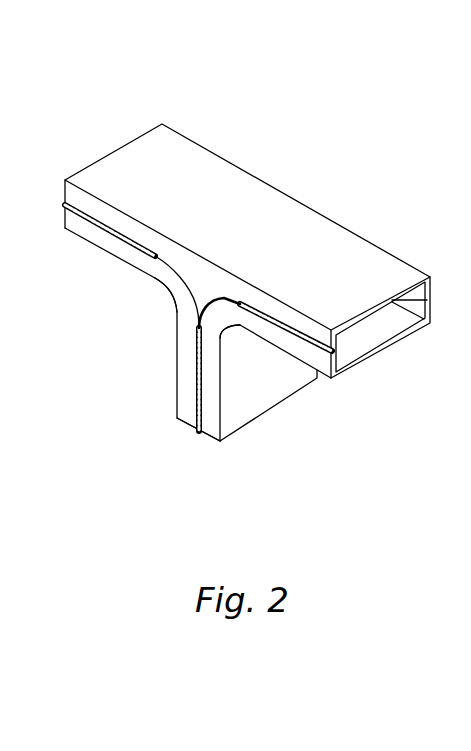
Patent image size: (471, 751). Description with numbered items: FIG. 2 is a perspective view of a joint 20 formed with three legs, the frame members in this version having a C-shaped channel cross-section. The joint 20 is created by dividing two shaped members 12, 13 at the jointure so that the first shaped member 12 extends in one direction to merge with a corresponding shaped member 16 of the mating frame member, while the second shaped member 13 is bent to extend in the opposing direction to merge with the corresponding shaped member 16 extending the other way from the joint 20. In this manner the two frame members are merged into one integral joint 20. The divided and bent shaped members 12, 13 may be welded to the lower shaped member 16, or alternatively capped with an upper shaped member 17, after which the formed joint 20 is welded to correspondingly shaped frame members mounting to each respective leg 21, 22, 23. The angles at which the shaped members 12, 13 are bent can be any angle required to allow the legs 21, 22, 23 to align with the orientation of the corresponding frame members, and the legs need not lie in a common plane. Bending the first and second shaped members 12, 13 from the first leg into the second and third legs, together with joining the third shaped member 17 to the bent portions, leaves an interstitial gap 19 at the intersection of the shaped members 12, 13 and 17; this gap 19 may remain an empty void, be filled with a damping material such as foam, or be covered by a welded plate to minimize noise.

The joint 20 is at (196, 113).
The leg 22 is at (115, 150).
The upper shaped member 17 is at (228, 197).
The interstitial gap 19 is at (188, 290).
The lower shaped member 16 is at (83, 227).
The first shaped member 12 is at (187, 395).
The second shaped member 13 is at (241, 408).
The leg 21 is at (220, 443).
The leg 23 is at (393, 343).